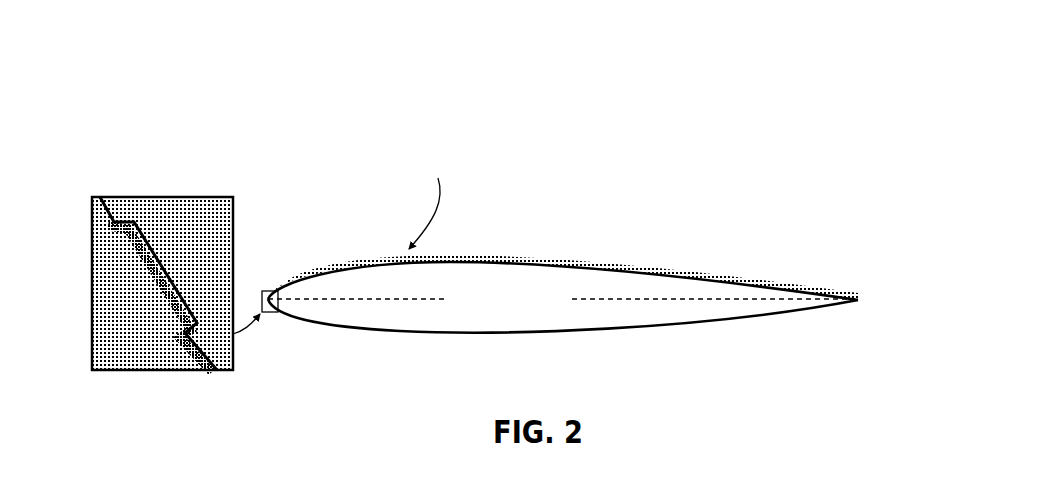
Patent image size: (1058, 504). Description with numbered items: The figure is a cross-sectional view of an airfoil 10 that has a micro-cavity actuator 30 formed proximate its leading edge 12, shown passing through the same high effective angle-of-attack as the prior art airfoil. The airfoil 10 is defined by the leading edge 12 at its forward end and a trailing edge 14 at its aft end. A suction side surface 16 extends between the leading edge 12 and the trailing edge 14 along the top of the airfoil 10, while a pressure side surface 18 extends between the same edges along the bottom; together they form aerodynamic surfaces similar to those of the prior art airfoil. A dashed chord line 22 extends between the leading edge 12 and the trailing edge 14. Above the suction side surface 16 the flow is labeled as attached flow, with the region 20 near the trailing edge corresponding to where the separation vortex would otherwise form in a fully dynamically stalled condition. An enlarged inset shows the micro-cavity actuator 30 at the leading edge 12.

The airfoil 10 is at (599, 275).
The leading edge 12 is at (266, 291).
The trailing edge 14 is at (858, 300).
The suction side surface 16 is at (560, 265).
The pressure side surface 18 is at (530, 335).
The separation vortex 20 is at (680, 262).
The chord line 22 is at (393, 299).
The micro-cavity actuator 30 is at (135, 242).